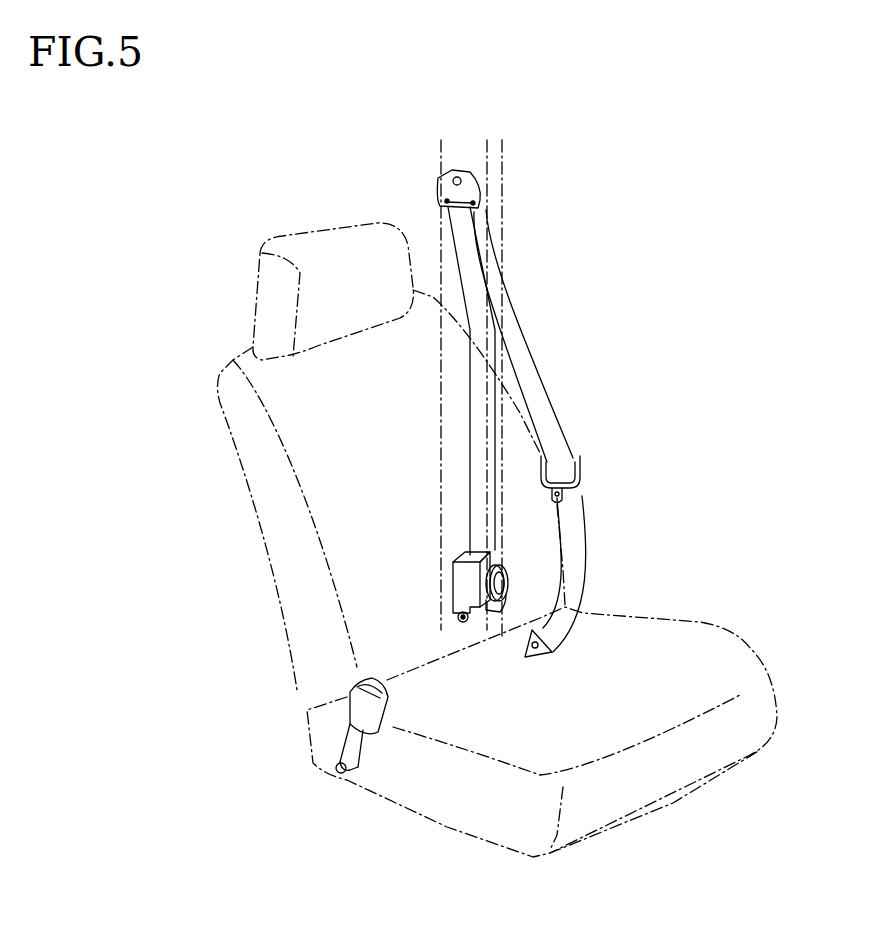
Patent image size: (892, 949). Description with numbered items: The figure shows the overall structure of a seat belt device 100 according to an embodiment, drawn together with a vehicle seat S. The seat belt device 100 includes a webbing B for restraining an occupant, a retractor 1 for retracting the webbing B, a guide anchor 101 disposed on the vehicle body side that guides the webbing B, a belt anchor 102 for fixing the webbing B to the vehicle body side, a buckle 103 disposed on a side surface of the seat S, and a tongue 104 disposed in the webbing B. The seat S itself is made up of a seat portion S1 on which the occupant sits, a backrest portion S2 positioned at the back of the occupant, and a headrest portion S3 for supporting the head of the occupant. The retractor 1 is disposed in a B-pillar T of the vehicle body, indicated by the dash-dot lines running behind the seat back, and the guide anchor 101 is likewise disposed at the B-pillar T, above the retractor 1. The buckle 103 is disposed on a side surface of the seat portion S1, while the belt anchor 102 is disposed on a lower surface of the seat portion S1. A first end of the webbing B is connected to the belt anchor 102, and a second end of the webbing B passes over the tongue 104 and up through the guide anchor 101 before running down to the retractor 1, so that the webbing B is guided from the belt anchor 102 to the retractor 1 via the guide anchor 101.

The retractor 1 is at (450, 578).
The seat belt device 100 is at (463, 471).
The guide anchor 101 is at (438, 181).
The belt anchor 102 is at (537, 663).
The buckle 103 is at (345, 692).
The tongue 104 is at (580, 468).
The webbing B is at (522, 335).
The B-pillar T is at (500, 161).
The seat S is at (449, 540).
The seat portion S1 is at (542, 732).
The backrest portion S2 is at (392, 490).
The headrest portion S3 is at (333, 291).